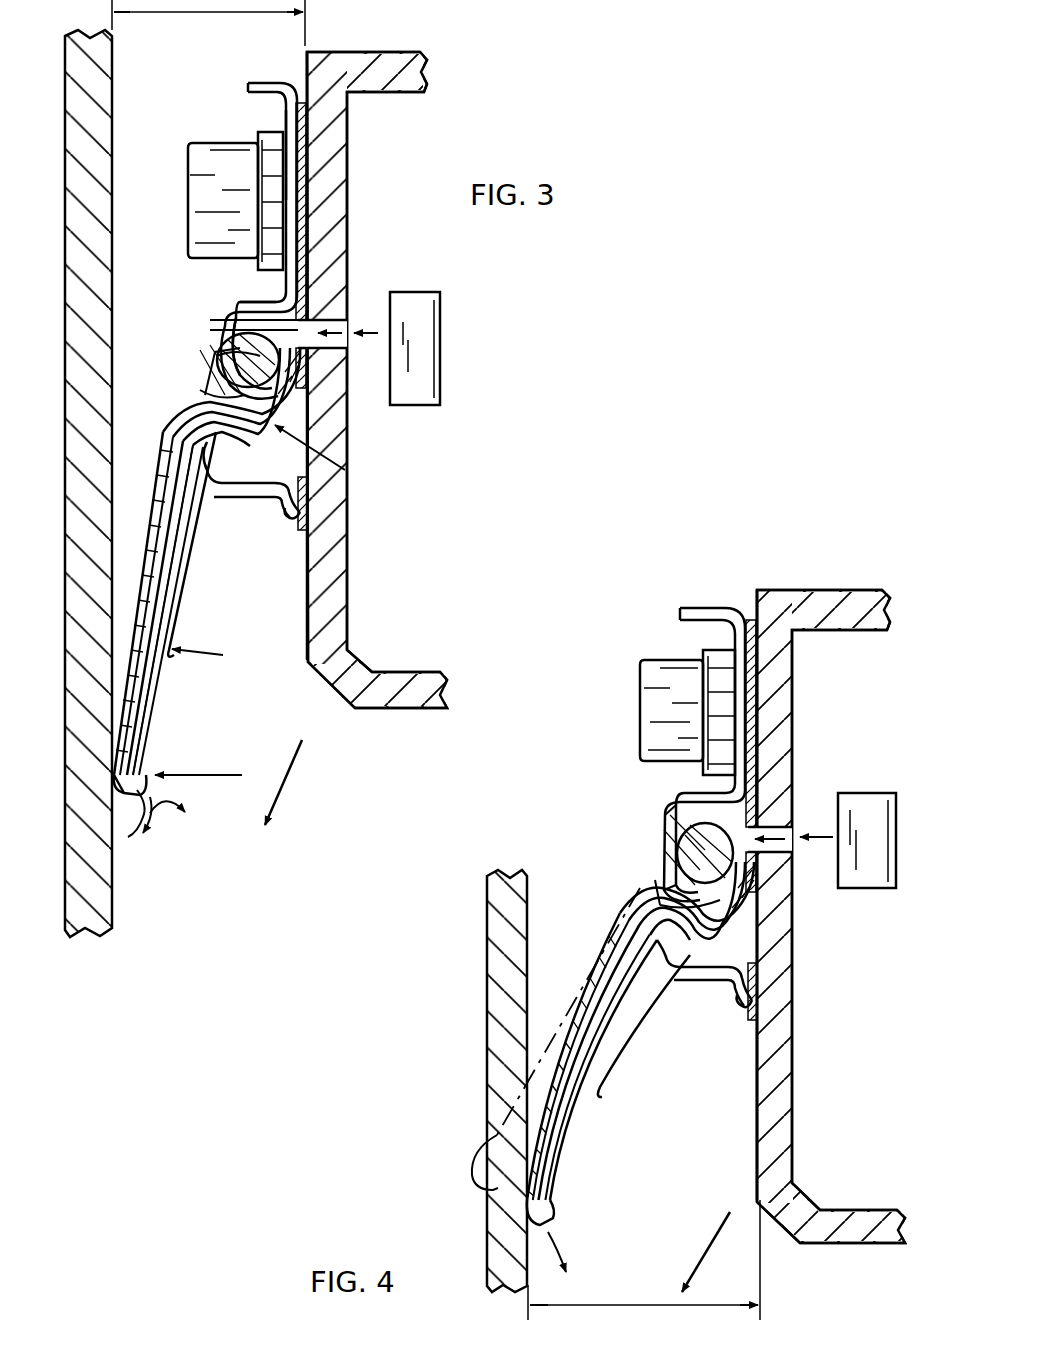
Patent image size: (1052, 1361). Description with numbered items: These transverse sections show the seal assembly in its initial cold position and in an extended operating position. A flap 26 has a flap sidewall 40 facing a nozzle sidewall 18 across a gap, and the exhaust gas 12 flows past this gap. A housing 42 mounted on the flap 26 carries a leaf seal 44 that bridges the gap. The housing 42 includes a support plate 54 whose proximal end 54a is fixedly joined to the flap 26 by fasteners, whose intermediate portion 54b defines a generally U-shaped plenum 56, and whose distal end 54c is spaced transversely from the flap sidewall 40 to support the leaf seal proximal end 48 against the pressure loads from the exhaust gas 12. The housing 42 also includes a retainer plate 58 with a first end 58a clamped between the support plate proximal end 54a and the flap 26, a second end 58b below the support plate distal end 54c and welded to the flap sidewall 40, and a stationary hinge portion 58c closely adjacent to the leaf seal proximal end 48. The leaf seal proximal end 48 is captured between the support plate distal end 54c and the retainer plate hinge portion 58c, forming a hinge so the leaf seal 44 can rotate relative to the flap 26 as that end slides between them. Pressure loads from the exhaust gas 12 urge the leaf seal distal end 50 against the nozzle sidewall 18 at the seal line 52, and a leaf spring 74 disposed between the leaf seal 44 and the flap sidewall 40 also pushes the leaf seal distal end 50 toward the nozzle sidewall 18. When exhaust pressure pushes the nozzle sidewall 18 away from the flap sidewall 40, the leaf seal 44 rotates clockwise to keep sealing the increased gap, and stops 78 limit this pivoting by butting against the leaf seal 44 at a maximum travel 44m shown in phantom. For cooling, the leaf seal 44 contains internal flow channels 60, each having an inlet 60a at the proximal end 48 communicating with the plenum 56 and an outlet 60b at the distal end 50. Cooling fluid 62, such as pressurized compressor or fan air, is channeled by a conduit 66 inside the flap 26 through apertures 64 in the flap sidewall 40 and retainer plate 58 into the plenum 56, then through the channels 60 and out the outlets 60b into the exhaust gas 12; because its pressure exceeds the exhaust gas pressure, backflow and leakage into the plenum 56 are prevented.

In FIG. 3, the exhaust gas 12 is at (290, 777).
In FIG. 4, the exhaust gas 12 is at (707, 1243).
In FIG. 3, the nozzle sidewall 18 is at (112, 68).
In FIG. 4, the nozzle sidewall 18 is at (486, 970).
In FIG. 3, the flap 26 is at (410, 52).
In FIG. 4, the flap 26 is at (838, 590).
In FIG. 3, the flap sidewall 40 is at (305, 68).
In FIG. 4, the flap sidewall 40 is at (755, 600).
In FIG. 3, the housing 42 is at (215, 320).
In FIG. 4, the housing 42 is at (655, 830).
In FIG. 3, the leaf seal 44 is at (156, 730).
In FIG. 4, the leaf seal 44 is at (583, 1140).
In FIG. 4, the maximum travel of the leaf seal 44m is at (470, 1160).
In FIG. 3, the leaf seal proximal end 48 is at (217, 345).
In FIG. 4, the leaf seal proximal end 48 is at (700, 826).
In FIG. 3, the leaf seal distal end 50 is at (150, 755).
In FIG. 3, the seal line 52 is at (114, 865).
In FIG. 4, the seal line 52 is at (525, 1216).
In FIG. 3, the support plate 54 is at (262, 78).
In FIG. 4, the support plate 54 is at (704, 754).
In FIG. 3, the support plate proximal end 54a is at (284, 126).
In FIG. 3, the support plate intermediate portion 54b is at (256, 302).
In FIG. 3, the support plate distal end 54c is at (225, 372).
In FIG. 4, the support plate distal end 54c is at (668, 852).
In FIG. 3, the plenum 56 is at (215, 358).
In FIG. 3, the retainer plate 58 is at (236, 493).
In FIG. 4, the retainer plate 58 is at (707, 980).
In FIG. 3, the retainer plate first end 58a is at (305, 118).
In FIG. 4, the retainer plate first end 58a is at (751, 756).
In FIG. 3, the retainer plate second end 58b is at (284, 512).
In FIG. 3, the retainer plate hinge portion 58c is at (280, 418).
In FIG. 4, the retainer plate hinge portion 58c is at (740, 920).
In FIG. 3, the internal flow channels 60 is at (155, 698).
In FIG. 3, the channel inlet 60a is at (212, 338).
In FIG. 3, the channel outlet 60b is at (128, 838).
In FIG. 3, the cooling fluid 62 is at (368, 336).
In FIG. 4, the cooling fluid 62 is at (824, 836).
In FIG. 3, the apertures 64 is at (347, 322).
In FIG. 4, the apertures 64 is at (770, 839).
In FIG. 3, the conduit 66 is at (442, 305).
In FIG. 4, the conduit 66 is at (860, 793).
In FIG. 3, the leaf spring 74 is at (186, 562).
In FIG. 4, the leaf spring 74 is at (638, 1010).
In FIG. 3, the stops 78 is at (215, 392).
In FIG. 4, the stops 78 is at (655, 878).